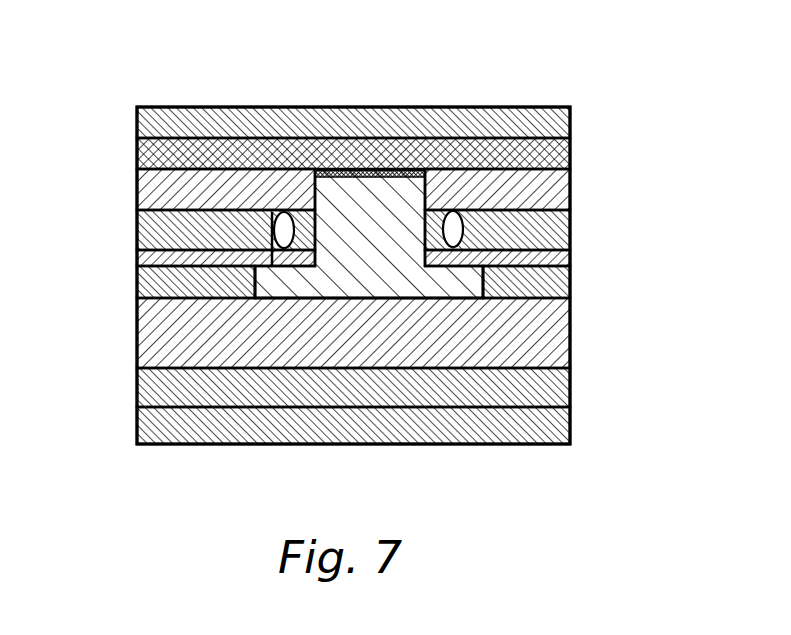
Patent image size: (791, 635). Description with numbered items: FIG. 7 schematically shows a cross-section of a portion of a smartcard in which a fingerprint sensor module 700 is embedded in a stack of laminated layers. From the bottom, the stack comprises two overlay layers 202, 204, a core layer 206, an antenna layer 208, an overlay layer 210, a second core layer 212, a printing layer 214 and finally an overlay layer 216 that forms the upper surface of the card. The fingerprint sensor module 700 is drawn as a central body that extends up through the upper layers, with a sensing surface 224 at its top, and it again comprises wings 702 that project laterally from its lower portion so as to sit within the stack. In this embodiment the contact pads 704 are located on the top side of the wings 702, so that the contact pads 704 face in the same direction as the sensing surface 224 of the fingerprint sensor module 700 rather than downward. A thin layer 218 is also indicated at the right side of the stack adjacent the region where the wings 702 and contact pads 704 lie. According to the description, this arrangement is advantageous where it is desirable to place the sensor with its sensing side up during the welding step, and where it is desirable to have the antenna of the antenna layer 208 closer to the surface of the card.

The overlay layer 202 is at (137, 419).
The overlay layer 204 is at (137, 379).
The core layer 206 is at (137, 336).
The antenna layer 208 is at (137, 281).
The overlay layer 210 is at (137, 235).
The core layer 212 is at (137, 192).
The printing layer 214 is at (137, 158).
The overlay layer 216 is at (137, 118).
The etch stop layer 218 is at (576, 255).
The sensing surface 224 is at (383, 150).
The fingerprint sensor module 700 is at (347, 200).
The wings 702 is at (282, 300).
The contact pads 704 is at (272, 212).